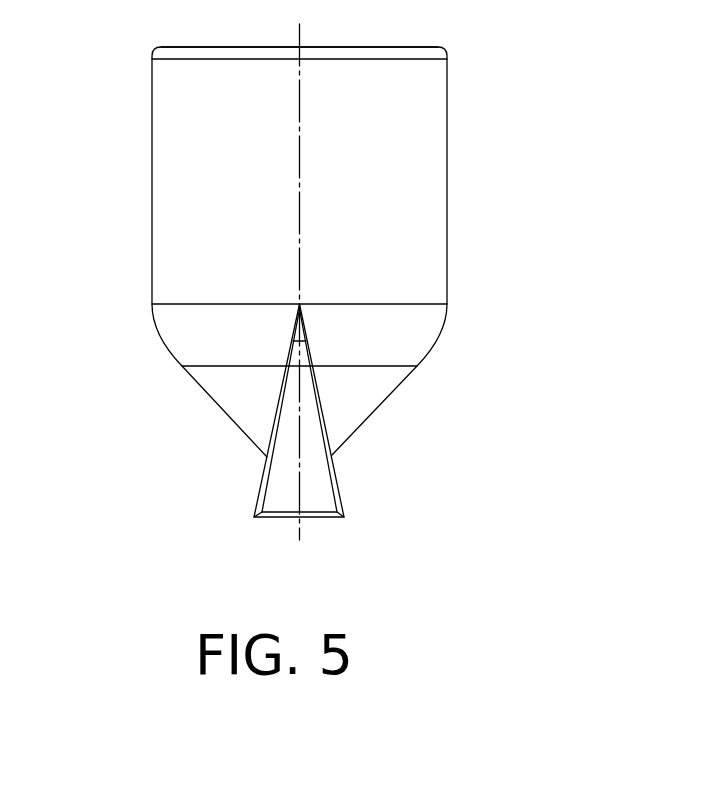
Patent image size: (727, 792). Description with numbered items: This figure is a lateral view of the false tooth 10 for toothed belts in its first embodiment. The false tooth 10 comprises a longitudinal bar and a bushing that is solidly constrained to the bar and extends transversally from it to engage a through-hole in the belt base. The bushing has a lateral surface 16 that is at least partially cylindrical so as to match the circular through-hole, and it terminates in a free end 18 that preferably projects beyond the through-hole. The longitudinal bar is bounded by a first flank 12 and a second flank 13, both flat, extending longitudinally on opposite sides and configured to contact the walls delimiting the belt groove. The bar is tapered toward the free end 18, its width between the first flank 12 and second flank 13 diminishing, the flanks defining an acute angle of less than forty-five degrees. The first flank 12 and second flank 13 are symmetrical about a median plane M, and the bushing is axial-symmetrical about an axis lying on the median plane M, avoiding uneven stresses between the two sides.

The false tooth 10 is at (346, 295).
The first flank 12 is at (336, 475).
The second flank 13 is at (262, 478).
The lateral surface 16 is at (447, 197).
The free end 18 is at (378, 47).
The median plane M is at (299, 535).